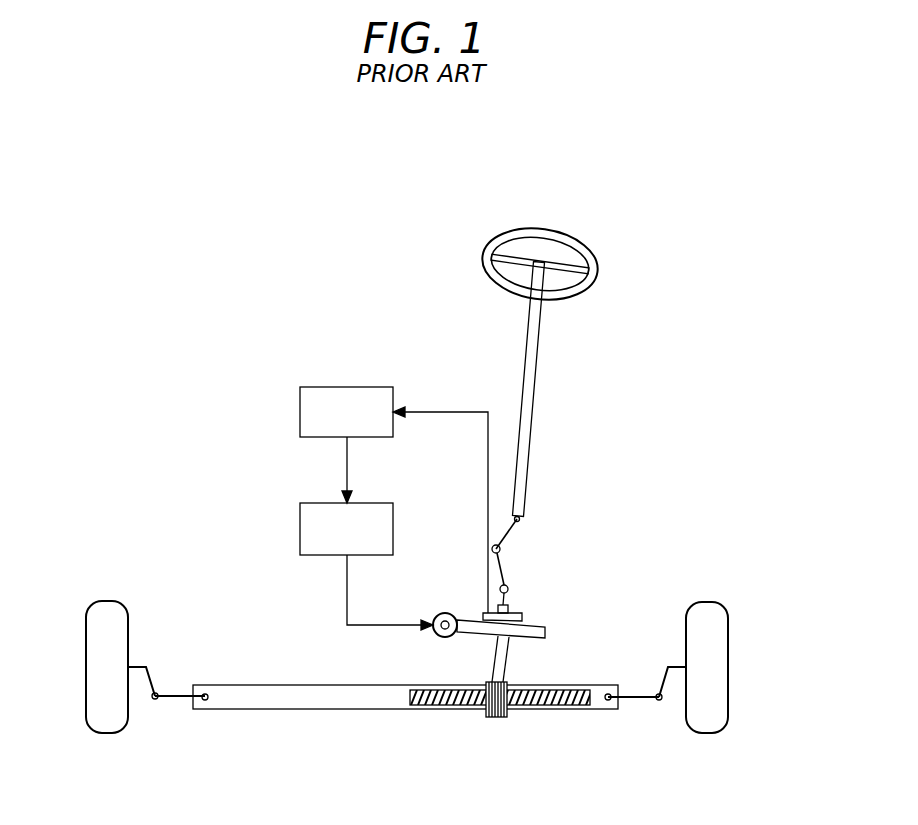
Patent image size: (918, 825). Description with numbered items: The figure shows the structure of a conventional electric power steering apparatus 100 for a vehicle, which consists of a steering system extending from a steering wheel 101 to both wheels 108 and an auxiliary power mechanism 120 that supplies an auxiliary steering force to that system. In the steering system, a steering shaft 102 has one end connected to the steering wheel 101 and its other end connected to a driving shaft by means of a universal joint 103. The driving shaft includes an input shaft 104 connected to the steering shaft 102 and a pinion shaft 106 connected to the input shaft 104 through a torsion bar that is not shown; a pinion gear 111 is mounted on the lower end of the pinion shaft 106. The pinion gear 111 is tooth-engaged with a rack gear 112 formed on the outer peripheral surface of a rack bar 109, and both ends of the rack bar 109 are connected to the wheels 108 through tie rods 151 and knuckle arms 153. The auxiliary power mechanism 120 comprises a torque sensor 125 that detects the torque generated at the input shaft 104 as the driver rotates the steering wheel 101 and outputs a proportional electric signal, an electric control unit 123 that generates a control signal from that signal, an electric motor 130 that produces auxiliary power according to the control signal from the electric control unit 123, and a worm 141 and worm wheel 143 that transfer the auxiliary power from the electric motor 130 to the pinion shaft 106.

The electric power steering apparatus 100 is at (225, 192).
The steering wheel 101 is at (483, 251).
The steering shaft 102 is at (538, 353).
The universal joint 103 is at (510, 539).
The input shaft 104 is at (510, 606).
The pinion shaft 106 is at (506, 666).
The wheels 108 is at (112, 604).
The rack bar 109 is at (310, 709).
The pinion gear 111 is at (492, 718).
The rack gear 112 is at (560, 706).
The auxiliary power mechanism 120 is at (230, 440).
The electric control unit 123 is at (352, 387).
The torque sensor 125 is at (524, 619).
The electric motor 130 is at (300, 527).
The worm 141 is at (434, 613).
The worm wheel 143 is at (468, 620).
The tie rods 151 is at (175, 694).
The knuckle arms 153 is at (678, 665).